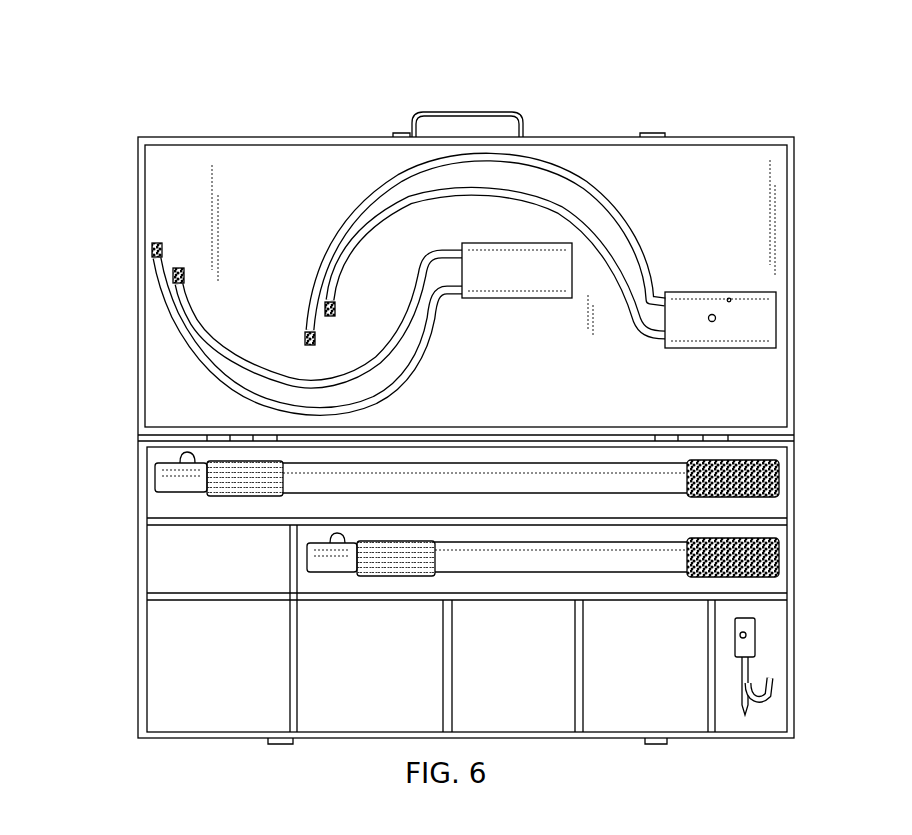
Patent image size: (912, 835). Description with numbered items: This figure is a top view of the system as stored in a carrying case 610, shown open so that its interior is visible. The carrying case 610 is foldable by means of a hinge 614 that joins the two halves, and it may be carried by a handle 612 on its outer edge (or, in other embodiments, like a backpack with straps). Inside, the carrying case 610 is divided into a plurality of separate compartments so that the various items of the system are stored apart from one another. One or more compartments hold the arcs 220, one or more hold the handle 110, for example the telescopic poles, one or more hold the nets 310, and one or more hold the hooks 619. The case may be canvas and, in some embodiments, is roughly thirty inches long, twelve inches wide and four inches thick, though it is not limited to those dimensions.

The carrying case 610 is at (793, 262).
The handle 612 is at (468, 108).
The hinge 614 is at (730, 437).
The arcs 220 is at (128, 350).
The handle 110 is at (770, 477).
The hooks 619 is at (773, 683).
The net components 310 is at (197, 671).